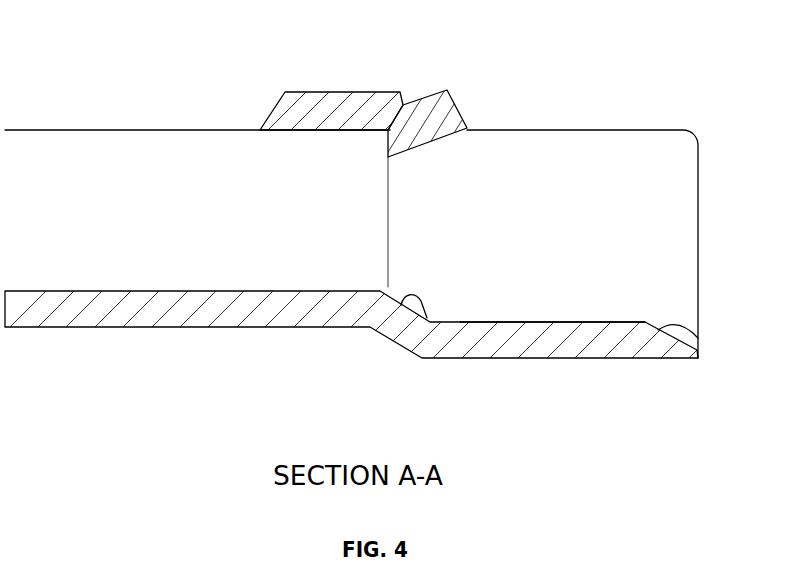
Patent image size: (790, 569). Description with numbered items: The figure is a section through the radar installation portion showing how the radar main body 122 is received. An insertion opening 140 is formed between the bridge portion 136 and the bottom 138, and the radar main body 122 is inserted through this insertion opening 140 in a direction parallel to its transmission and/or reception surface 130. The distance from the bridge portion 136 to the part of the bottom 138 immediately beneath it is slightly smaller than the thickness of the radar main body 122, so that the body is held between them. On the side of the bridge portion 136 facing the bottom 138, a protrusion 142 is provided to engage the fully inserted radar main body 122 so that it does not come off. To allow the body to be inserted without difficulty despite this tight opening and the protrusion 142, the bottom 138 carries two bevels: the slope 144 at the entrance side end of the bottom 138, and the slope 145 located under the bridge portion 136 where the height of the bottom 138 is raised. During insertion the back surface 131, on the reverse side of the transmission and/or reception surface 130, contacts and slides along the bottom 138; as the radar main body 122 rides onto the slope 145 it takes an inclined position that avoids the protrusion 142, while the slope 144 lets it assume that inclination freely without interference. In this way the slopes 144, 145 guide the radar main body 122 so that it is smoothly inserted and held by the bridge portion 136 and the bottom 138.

The radar main body 122 is at (165, 163).
The transmission and/or reception surface 130 is at (63, 128).
The back surface 131 is at (135, 293).
The bridge portion 136 is at (350, 90).
The bottom 138 is at (533, 322).
The insertion opening 140 is at (436, 151).
The protrusion 142 is at (388, 145).
The slope 144 is at (698, 331).
The slope 145 is at (404, 348).